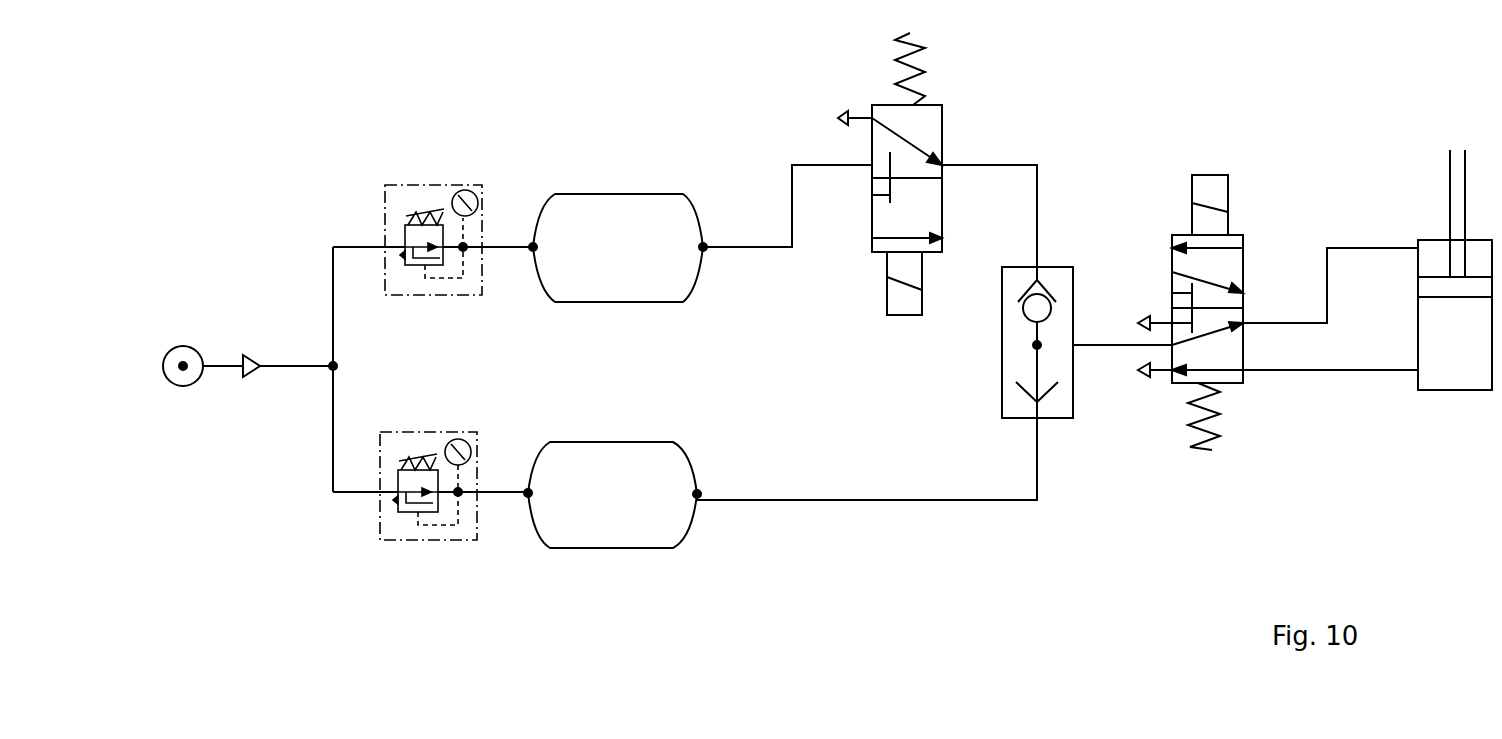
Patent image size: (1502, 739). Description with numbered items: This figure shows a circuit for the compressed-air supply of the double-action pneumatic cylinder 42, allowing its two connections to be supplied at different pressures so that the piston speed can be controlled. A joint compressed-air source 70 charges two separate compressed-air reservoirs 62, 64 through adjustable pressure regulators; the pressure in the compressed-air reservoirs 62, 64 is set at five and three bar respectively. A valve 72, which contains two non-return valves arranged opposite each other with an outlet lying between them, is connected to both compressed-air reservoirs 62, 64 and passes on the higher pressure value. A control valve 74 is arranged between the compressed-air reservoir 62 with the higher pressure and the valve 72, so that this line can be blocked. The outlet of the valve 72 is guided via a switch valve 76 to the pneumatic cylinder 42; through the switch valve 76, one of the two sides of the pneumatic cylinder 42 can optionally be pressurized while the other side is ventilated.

The compressed-air source 70 is at (180, 347).
The compressed-air reservoir 62 is at (597, 200).
The compressed-air reservoir 64 is at (572, 542).
The control valve 74 is at (937, 138).
The valve 72 is at (1053, 410).
The switch valve 76 is at (1180, 240).
The pneumatic cylinder 42 is at (1462, 378).